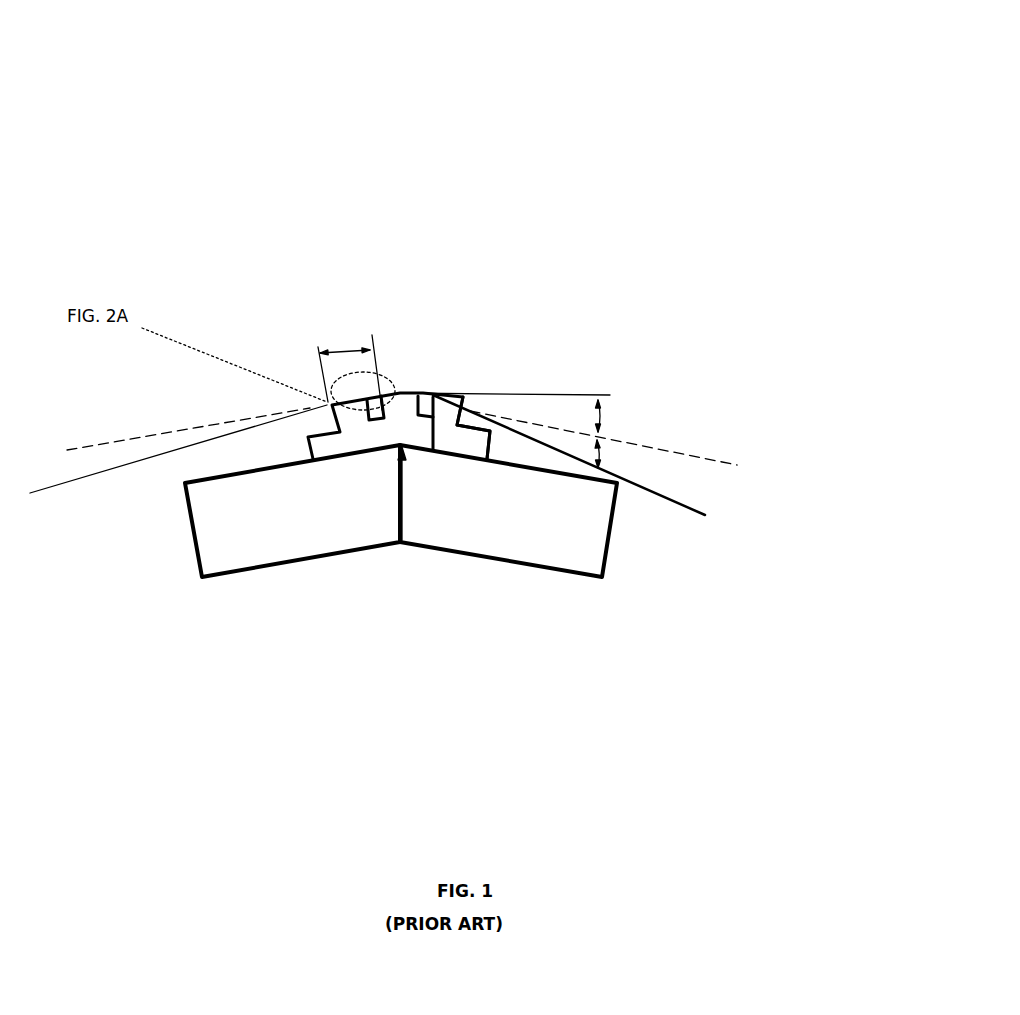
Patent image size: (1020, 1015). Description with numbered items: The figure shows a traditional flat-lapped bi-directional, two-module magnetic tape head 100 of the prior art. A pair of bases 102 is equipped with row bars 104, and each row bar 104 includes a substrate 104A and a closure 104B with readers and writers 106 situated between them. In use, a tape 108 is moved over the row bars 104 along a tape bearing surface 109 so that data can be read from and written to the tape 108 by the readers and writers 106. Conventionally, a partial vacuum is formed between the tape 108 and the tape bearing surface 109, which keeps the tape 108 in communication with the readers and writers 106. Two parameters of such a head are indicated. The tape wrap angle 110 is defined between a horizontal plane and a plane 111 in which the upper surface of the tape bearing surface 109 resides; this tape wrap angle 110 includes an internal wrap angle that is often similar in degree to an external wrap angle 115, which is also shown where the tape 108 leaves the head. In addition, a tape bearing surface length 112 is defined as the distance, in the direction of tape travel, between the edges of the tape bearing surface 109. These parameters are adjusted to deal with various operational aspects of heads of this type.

The magnetic tape head 100 is at (692, 197).
The base 102 is at (193, 533).
The row bar 104 is at (453, 437).
The substrate 104A is at (465, 462).
The closure 104B is at (421, 415).
The readers and writers 106 is at (372, 425).
The tape 108 is at (630, 485).
The tape bearing surface 109 is at (466, 447).
The tape wrap angle 110 is at (612, 402).
The plane 111 is at (710, 460).
The tape bearing surface length 112 is at (345, 345).
The external wrap angle 115 is at (618, 462).